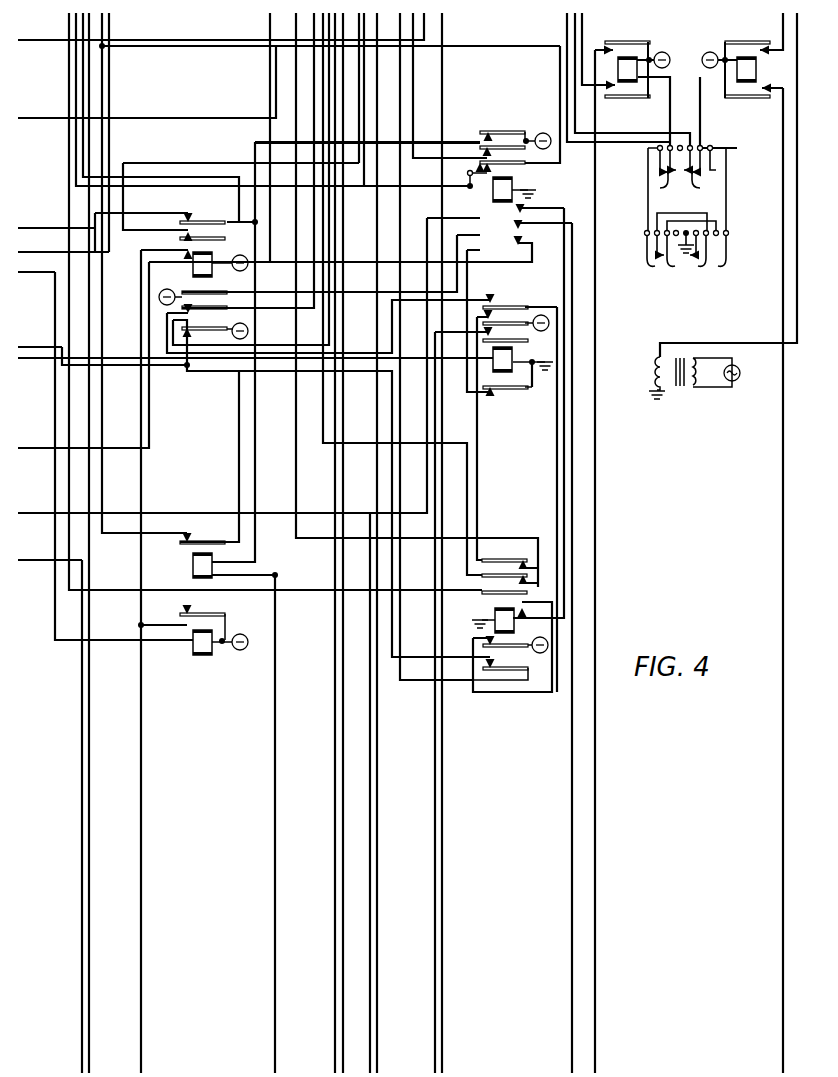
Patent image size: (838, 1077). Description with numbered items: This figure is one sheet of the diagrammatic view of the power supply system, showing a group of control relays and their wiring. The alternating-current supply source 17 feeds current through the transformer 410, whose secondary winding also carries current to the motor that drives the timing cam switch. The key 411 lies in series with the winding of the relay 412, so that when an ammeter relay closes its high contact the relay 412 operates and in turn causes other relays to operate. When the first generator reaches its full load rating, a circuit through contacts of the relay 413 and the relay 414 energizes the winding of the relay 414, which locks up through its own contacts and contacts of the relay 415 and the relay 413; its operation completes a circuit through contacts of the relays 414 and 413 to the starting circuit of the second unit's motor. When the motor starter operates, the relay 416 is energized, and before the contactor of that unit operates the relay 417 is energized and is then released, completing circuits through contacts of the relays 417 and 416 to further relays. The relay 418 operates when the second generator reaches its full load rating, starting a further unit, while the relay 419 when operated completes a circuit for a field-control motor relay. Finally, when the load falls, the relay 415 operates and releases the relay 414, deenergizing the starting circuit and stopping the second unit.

The relay 413 is at (202, 250).
The relay 414 is at (513, 186).
The relay 415 is at (193, 566).
The relay 416 is at (496, 607).
The relay 417 is at (514, 352).
The relay 418 is at (199, 656).
The relay 419 is at (629, 82).
The relay 412 is at (746, 82).
The key 411 is at (705, 203).
The transformer 410 is at (679, 396).
The alternating-current supply source 17 is at (737, 381).